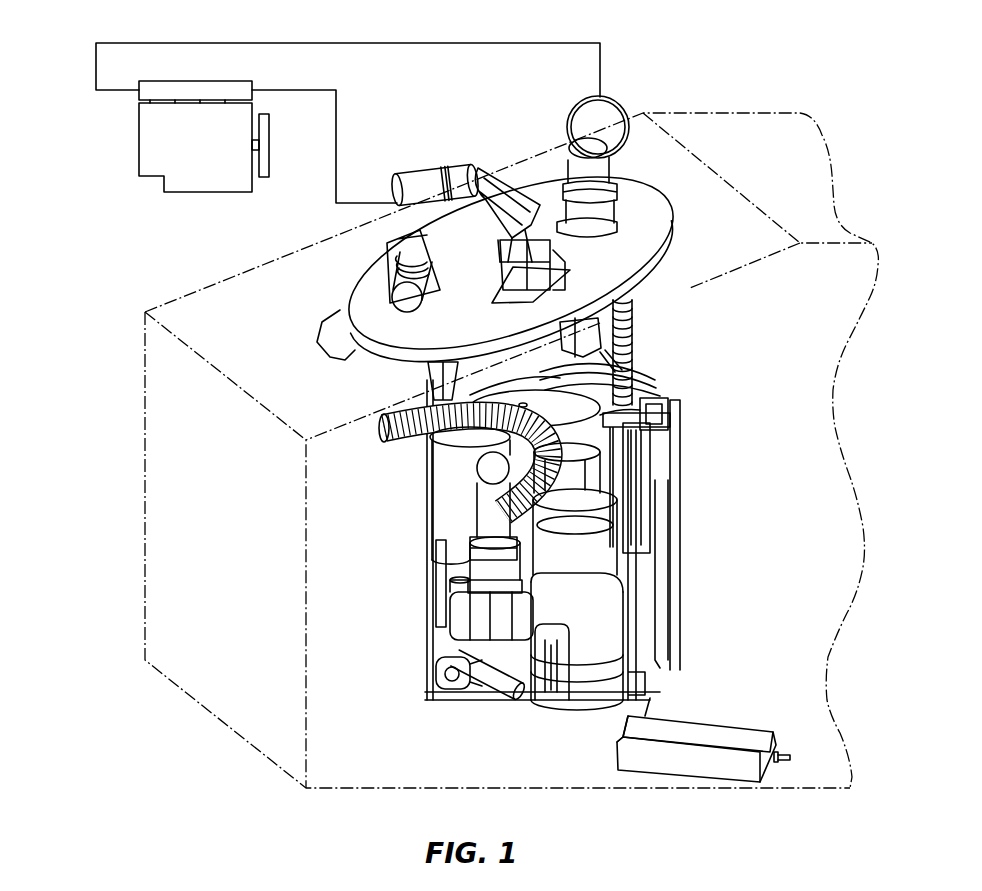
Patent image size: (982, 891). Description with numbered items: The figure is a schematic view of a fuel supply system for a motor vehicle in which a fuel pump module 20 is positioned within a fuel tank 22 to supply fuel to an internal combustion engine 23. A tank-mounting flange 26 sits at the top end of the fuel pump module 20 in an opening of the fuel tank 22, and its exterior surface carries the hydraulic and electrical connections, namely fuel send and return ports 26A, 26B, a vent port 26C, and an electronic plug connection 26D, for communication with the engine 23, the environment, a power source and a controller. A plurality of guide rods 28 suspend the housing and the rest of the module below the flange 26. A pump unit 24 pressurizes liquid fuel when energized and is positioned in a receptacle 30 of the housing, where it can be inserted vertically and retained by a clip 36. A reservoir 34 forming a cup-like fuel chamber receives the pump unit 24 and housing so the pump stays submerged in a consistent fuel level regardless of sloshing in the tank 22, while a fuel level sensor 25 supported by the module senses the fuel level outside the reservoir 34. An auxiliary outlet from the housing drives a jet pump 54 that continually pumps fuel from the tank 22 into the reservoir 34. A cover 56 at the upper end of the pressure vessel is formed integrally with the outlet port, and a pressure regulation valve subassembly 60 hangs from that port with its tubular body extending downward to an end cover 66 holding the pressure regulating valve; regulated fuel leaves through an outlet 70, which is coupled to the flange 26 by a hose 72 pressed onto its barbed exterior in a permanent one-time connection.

The fuel pump module 20 is at (290, 332).
The fuel tank 22 is at (763, 112).
The internal combustion engine 23 is at (152, 142).
The pump unit 24 is at (597, 540).
The fuel level sensor 25 is at (707, 727).
The tank-mounting flange 26 is at (650, 233).
The fuel send port 26A is at (613, 117).
The fuel return port 26B is at (427, 183).
The vent port 26C is at (403, 278).
The electronic plug connection 26D is at (575, 273).
The guide rods 28 is at (630, 332).
The receptacle 30 is at (603, 630).
The reservoir 34 is at (425, 650).
The clip 36 is at (548, 700).
The jet pump 54 is at (467, 688).
The cover 56 is at (668, 423).
The pressure regulation valve subassembly 60 is at (485, 505).
The end cover 66 is at (490, 580).
The outlet 70 is at (485, 565).
The hose 72 is at (387, 438).